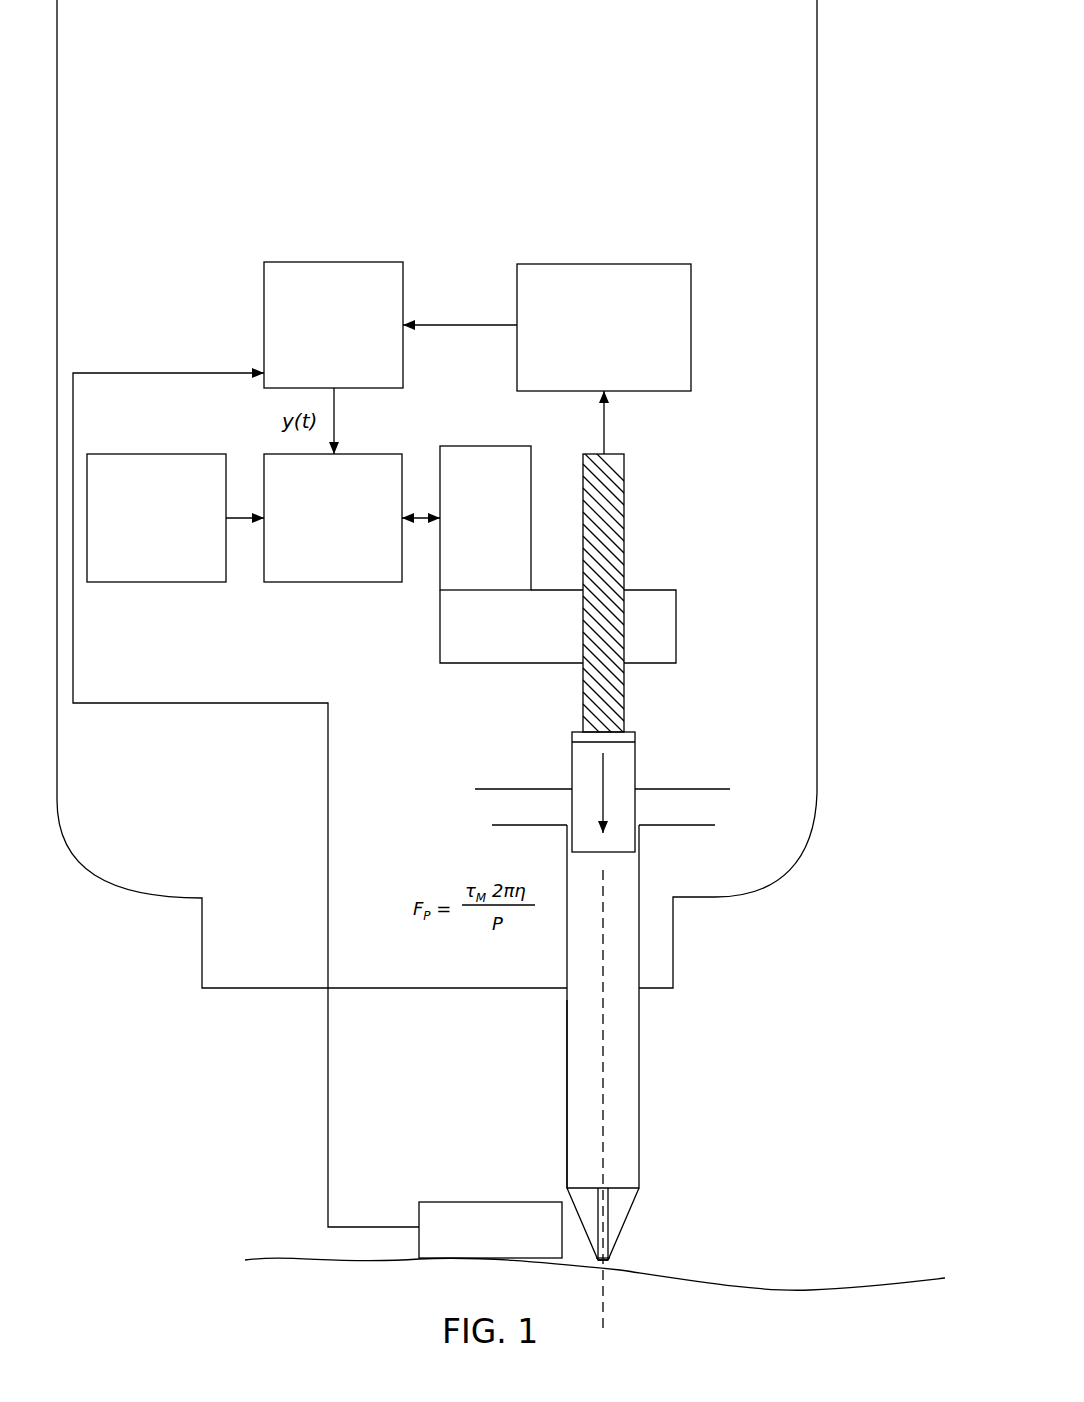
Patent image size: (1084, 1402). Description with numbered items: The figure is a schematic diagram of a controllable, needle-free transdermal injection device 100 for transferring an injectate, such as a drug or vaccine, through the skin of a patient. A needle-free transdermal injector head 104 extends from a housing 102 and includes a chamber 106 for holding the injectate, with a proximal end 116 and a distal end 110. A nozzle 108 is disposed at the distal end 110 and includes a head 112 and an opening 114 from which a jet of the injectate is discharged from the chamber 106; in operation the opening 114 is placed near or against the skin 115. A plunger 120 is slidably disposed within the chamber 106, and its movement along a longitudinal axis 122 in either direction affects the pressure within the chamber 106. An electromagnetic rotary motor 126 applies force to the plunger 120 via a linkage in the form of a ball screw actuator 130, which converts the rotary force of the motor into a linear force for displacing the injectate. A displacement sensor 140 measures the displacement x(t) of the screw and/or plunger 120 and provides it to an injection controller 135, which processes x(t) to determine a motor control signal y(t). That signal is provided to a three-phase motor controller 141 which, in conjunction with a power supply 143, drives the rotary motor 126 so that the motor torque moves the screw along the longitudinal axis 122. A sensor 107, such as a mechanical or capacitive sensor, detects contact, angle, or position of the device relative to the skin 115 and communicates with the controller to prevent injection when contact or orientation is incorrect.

The controllable, needle-free transdermal injection device 100 is at (264, 325).
The housing 102 is at (815, 817).
The needle-free transdermal injector head 104 is at (639, 1115).
The chamber 106 is at (590, 1068).
The sensor 107 is at (419, 1239).
The nozzle 108 is at (648, 1237).
The distal end 110 is at (568, 1183).
The head 112 is at (633, 1207).
The opening 114 is at (607, 1262).
The skin 115 is at (785, 1285).
The proximal end 116 is at (640, 862).
The plunger 120 is at (635, 768).
The longitudinal axis 122 is at (603, 1040).
The electromagnetic rotary motor 126 is at (485, 446).
The ball screw actuator 130 is at (676, 590).
The injection controller 135 is at (340, 262).
The displacement sensor 140 is at (600, 264).
The three-phase motor controller 141 is at (330, 582).
The power supply 143 is at (158, 582).